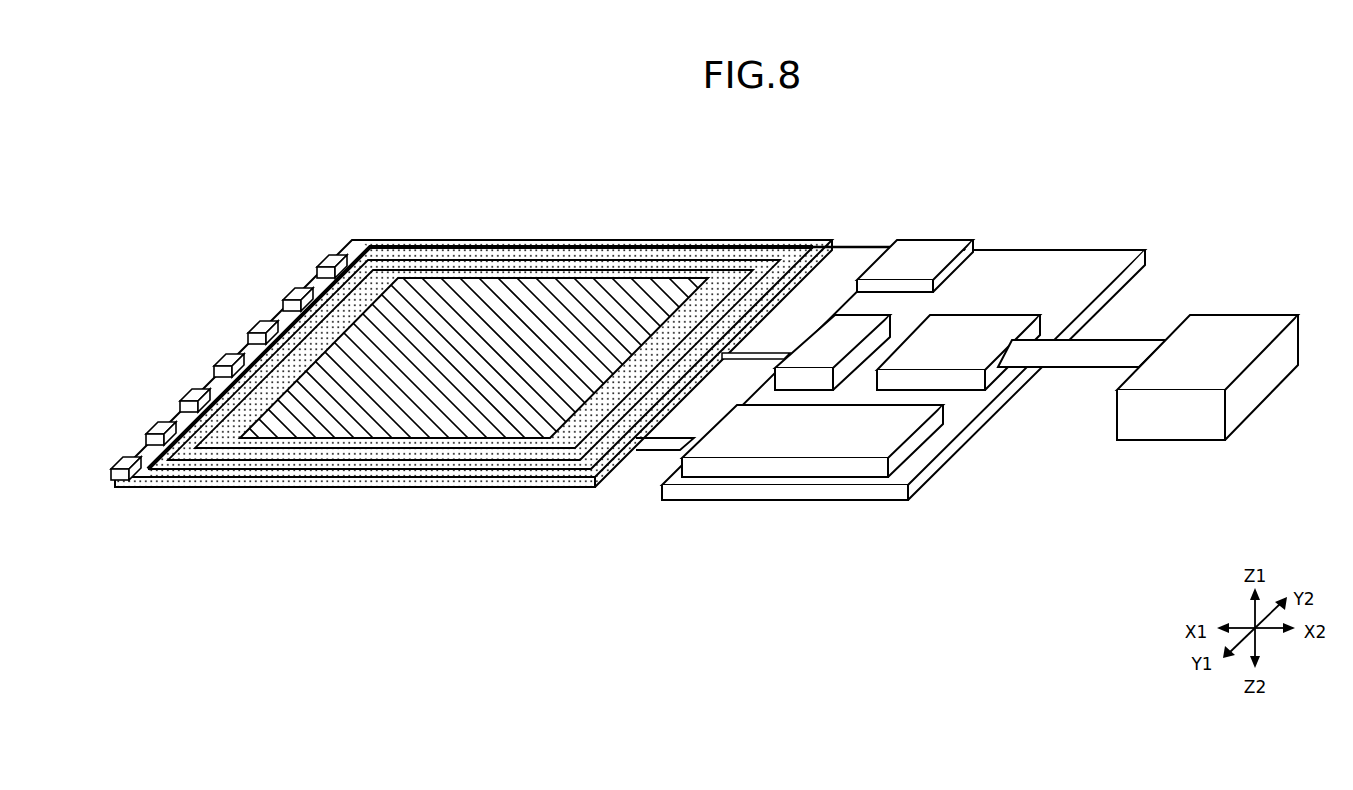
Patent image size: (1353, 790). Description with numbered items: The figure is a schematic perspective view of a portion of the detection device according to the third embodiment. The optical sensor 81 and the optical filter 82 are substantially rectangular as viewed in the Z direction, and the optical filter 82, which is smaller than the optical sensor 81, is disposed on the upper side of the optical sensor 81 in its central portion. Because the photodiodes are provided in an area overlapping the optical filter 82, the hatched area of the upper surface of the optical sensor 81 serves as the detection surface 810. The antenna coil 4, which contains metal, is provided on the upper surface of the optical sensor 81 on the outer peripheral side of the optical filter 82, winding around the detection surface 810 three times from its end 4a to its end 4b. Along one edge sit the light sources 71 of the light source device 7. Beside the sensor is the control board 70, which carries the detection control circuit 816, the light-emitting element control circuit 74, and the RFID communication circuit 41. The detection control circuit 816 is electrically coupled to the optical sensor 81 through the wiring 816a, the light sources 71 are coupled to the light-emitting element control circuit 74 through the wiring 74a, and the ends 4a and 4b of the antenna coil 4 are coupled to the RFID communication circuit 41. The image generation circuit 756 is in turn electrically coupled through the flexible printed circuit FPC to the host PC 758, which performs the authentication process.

The antenna coil 4 is at (473, 408).
The end 4a is at (656, 478).
The end 4b is at (660, 452).
The light source device 7 is at (229, 326).
The light sources 71 is at (194, 392).
The optical sensor 81 is at (614, 245).
The detection surface 810 is at (336, 423).
The optical filter 82 is at (480, 420).
The detection control circuit 816 is at (812, 348).
The wiring 816a is at (762, 355).
The RFID communication circuit 41 is at (752, 437).
The control board 70 is at (1122, 240).
The light-emitting element control circuit 74 is at (924, 250).
The wiring 74a is at (859, 245).
The image generation circuit 756 is at (962, 333).
The host PC 758 is at (1230, 330).
The flexible printed circuit FPC is at (1085, 350).